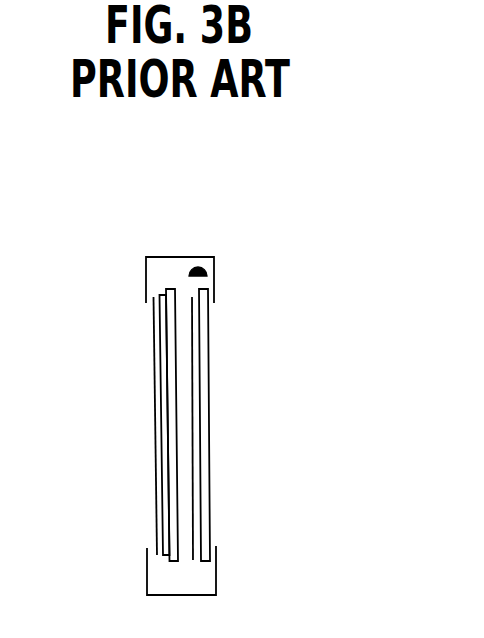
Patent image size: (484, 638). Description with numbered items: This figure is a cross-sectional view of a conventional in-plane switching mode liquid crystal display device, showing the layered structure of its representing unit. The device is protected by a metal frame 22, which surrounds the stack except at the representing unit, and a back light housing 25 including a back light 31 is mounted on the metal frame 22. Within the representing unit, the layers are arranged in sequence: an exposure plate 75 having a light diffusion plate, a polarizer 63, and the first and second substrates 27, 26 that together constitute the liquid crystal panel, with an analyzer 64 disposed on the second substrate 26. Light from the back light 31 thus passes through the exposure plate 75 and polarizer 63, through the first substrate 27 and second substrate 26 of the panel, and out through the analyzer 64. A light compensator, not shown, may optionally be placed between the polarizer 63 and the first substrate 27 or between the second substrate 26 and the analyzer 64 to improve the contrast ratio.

The metal frame 22 is at (207, 581).
The back light housing 25 is at (191, 268).
The second substrate 26 is at (156, 330).
The first substrate 27 is at (173, 421).
The back light 31 is at (214, 267).
The polarizer 63 is at (193, 330).
The analyzer 64 is at (154, 375).
The exposure plate 75 is at (208, 373).